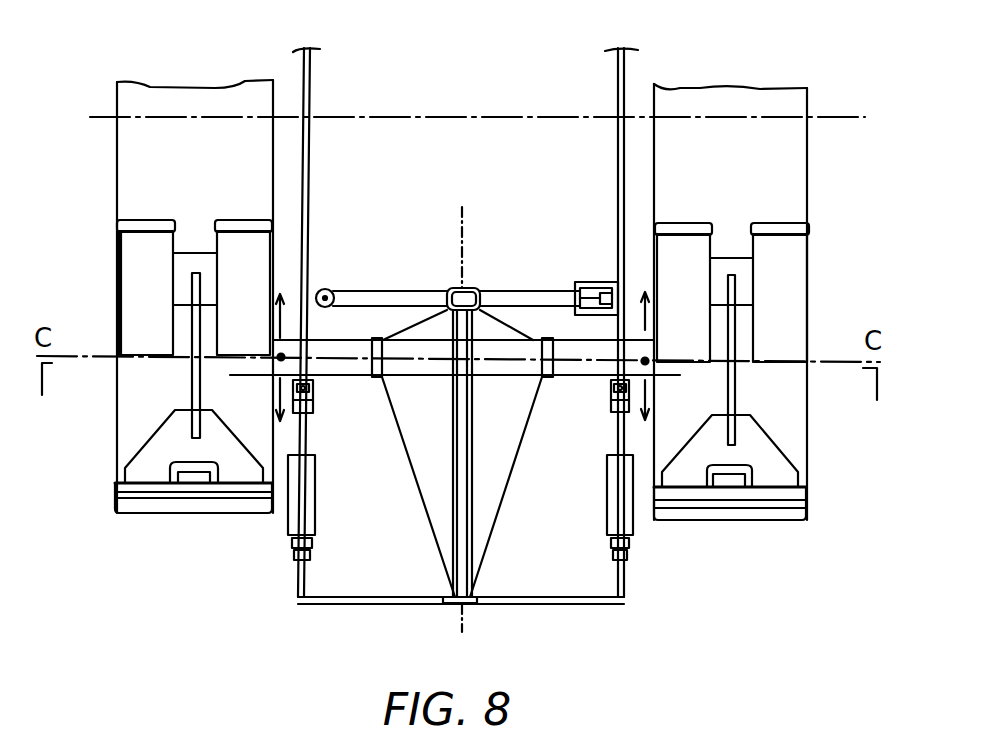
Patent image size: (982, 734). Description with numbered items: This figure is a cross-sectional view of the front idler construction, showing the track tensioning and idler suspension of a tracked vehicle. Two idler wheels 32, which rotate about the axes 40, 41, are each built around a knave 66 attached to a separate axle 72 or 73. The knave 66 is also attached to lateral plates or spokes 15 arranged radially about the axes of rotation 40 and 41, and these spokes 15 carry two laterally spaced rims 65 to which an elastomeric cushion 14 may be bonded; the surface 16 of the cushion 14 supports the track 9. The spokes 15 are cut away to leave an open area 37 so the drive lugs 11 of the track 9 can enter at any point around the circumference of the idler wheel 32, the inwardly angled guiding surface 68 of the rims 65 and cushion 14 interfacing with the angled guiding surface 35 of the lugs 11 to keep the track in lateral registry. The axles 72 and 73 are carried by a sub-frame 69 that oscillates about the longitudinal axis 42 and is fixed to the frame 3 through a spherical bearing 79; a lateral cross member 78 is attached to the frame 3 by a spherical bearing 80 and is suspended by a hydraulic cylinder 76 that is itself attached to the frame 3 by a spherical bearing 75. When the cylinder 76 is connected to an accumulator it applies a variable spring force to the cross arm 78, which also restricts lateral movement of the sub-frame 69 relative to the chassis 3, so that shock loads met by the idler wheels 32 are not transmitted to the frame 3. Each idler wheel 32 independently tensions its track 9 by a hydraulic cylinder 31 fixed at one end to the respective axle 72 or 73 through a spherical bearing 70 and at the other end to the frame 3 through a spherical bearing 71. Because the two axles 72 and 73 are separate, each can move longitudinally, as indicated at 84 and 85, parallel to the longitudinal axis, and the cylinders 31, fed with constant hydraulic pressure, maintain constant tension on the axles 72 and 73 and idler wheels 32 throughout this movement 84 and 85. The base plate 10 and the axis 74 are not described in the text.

The frame 3 is at (603, 70).
The track 9 is at (130, 140).
The base plate 10 is at (800, 517).
The drive lugs 11 is at (727, 491).
The elastomeric cushion 14 is at (803, 493).
The lateral plates or spokes 15 is at (773, 465).
The surface 16 is at (693, 223).
The hydraulic cylinders 31 is at (315, 500).
The idler wheels 32 is at (138, 273).
The guiding surface 35 is at (200, 484).
The open area 37 is at (195, 243).
The axis 40 is at (133, 352).
The axis 41 is at (787, 362).
The longitudinal axis 42 is at (465, 210).
The rims 65 is at (143, 514).
The knave 66 is at (190, 382).
The guiding surface 68 is at (180, 218).
The sub-frame 69 is at (490, 453).
The spherical bearing 70 is at (315, 392).
The spherical bearings 71 is at (312, 553).
The axle 72 is at (283, 353).
The axle 73 is at (638, 355).
The transverse axis 74 is at (828, 117).
The spherical bearing 75 is at (324, 289).
The hydraulic cylinder 76 is at (347, 293).
The lateral cross member 78 is at (522, 297).
The spherical bearing 79 is at (480, 593).
The spherical bearing 80 is at (590, 283).
The longitudinal movement 84 is at (277, 350).
The longitudinal movement 85 is at (657, 356).